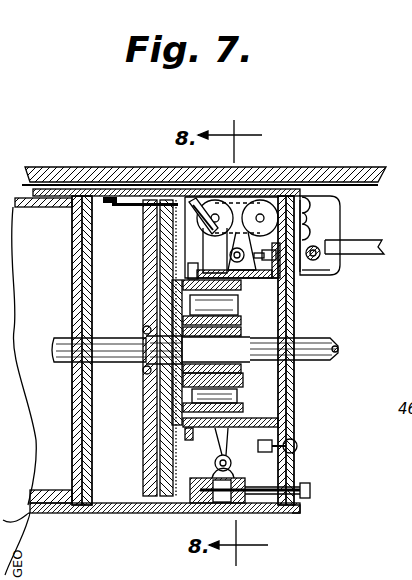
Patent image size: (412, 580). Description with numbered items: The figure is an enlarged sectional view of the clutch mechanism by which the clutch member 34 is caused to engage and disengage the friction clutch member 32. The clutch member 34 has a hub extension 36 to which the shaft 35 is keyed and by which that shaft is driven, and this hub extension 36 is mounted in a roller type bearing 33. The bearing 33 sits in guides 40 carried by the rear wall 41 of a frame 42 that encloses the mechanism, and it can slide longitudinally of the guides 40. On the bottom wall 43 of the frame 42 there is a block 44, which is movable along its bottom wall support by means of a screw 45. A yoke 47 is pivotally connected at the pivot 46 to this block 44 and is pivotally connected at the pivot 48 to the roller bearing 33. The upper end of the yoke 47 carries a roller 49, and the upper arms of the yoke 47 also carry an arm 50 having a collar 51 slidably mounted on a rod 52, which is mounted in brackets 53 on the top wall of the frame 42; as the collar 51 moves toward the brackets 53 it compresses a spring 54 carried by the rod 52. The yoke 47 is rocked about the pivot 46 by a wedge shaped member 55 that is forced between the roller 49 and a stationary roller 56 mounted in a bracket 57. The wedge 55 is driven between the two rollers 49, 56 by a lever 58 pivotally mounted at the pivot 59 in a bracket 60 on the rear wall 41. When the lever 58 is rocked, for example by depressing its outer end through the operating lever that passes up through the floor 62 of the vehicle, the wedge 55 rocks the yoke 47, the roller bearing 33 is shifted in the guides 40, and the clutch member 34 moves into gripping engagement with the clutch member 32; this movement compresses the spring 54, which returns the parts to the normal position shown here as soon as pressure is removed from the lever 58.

The friction clutch member 32 is at (148, 230).
The bearing 33 is at (288, 330).
The clutch member 34 is at (173, 278).
The shaft 35 is at (322, 341).
The hub extension 36 is at (280, 374).
The guides 40 is at (294, 303).
The rear wall 41 is at (296, 462).
The frame 42 is at (108, 513).
The bottom wall 43 is at (300, 514).
The block 44 is at (190, 508).
The screw 45 is at (304, 500).
The pivotal connection 46 is at (210, 432).
The yoke 47 is at (215, 453).
The pivotal connection 48 is at (203, 352).
The roller 49 is at (233, 200).
The arm 50 is at (229, 235).
The collar 51 is at (196, 197).
The rod 52 is at (136, 190).
The brackets 53 is at (112, 210).
The spring 54 is at (136, 210).
The wedge shaped member 55 is at (310, 224).
The stationary roller 56 is at (296, 196).
The bracket 57 is at (258, 200).
The lever 58 is at (368, 243).
The pivotal point 59 is at (320, 252).
The bracket 60 is at (322, 275).
The floor 62 is at (82, 170).